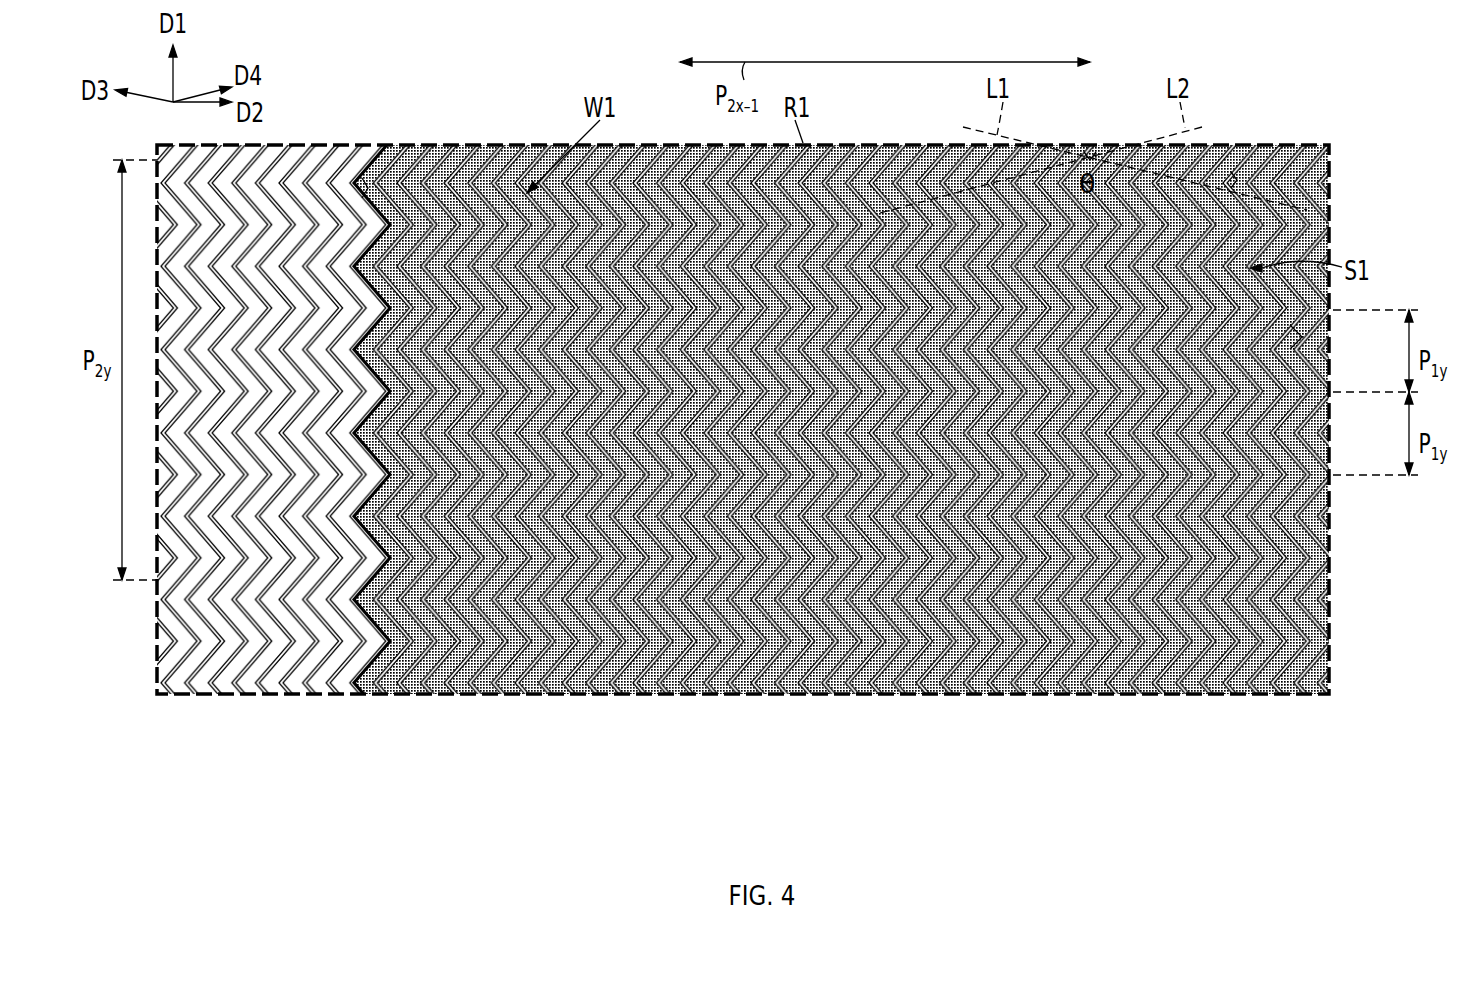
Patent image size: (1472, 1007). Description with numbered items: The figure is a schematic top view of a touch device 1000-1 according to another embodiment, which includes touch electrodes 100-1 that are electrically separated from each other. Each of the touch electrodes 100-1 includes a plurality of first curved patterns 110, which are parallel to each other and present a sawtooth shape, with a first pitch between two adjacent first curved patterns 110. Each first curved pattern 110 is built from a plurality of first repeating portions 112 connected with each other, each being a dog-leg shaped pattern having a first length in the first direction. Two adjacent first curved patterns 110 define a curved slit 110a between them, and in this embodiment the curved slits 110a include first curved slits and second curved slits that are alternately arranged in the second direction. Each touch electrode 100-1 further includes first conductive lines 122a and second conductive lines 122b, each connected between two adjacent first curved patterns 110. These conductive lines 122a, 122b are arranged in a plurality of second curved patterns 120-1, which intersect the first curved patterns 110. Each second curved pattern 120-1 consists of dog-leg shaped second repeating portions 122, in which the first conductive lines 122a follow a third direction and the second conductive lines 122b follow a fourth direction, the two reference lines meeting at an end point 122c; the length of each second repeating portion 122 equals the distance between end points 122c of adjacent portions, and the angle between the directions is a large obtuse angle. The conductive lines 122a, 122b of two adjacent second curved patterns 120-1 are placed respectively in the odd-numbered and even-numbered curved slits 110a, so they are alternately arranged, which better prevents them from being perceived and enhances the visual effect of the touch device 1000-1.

The first curved patterns 110 is at (743, 462).
The curved slits 110a is at (786, 398).
The first repeating portions 112 is at (1336, 347).
The second curved patterns 120-1 is at (903, 419).
The second repeating portions 122 is at (472, 145).
The first conductive lines 122a is at (1252, 141).
The second conductive lines 122b is at (621, 419).
The end point 122c is at (1115, 126).
The touch electrodes 100-1 is at (1329, 784).
The touch device 1000-1 is at (769, 514).